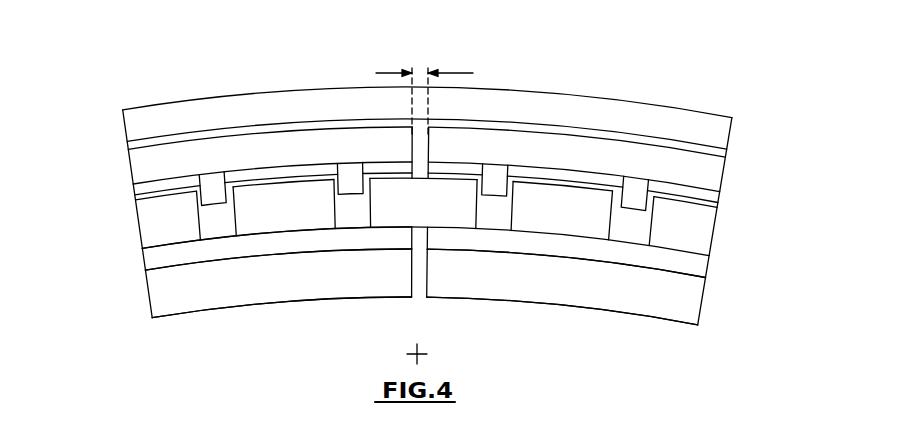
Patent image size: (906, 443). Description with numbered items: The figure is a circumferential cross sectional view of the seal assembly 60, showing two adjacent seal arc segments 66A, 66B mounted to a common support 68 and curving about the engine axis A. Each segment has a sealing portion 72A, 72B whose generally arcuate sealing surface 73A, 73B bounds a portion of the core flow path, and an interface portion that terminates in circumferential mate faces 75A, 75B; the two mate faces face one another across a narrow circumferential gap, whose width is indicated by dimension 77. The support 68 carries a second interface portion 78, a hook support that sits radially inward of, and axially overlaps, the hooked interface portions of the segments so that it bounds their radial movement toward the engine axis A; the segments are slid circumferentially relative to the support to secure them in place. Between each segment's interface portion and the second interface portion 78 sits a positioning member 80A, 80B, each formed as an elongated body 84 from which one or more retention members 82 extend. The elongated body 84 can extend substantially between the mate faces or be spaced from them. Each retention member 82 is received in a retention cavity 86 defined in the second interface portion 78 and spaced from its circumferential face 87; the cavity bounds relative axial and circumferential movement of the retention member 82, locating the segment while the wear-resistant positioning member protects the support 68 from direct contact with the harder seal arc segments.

The seal assembly 60 is at (90, 48).
The support 68 is at (218, 98).
The first seal arc segment 66A is at (128, 160).
The second seal arc segment 66B is at (723, 185).
The first mate face 75A is at (130, 168).
The second mate face 75B is at (727, 162).
The gap width 77 is at (385, 73).
The first positioning member 80A is at (134, 190).
The second positioning member 80B is at (714, 205).
The retention member 82 is at (200, 199).
The elongated body 84 is at (287, 185).
The retention cavity 86 is at (226, 229).
The second interface portion 78 is at (142, 229).
The circumferential face 87 is at (146, 254).
The first sealing portion 72A is at (151, 289).
The second sealing portion 72B is at (703, 298).
The first sealing surface 73A is at (243, 309).
The second sealing surface 73B is at (572, 308).
The engine axis A is at (416, 342).